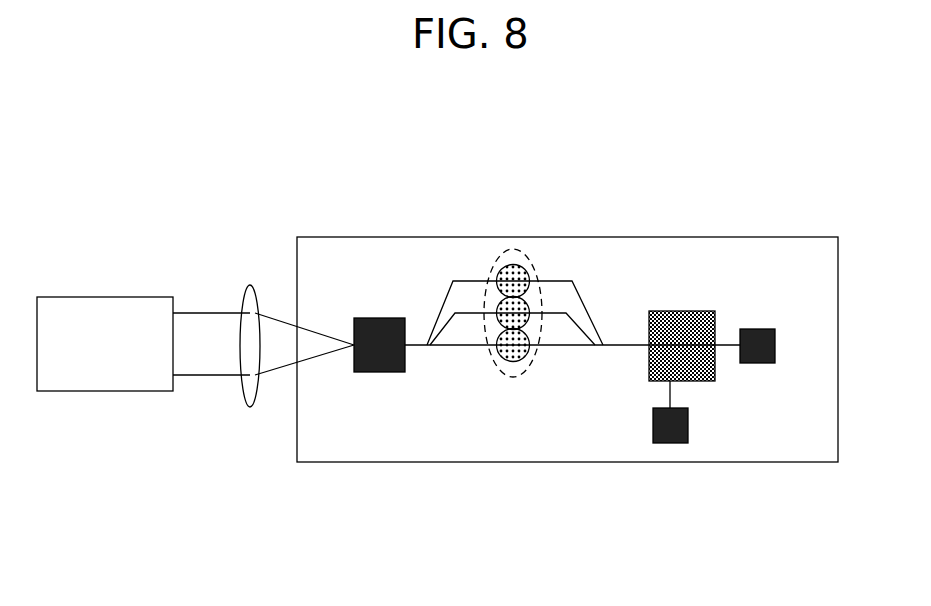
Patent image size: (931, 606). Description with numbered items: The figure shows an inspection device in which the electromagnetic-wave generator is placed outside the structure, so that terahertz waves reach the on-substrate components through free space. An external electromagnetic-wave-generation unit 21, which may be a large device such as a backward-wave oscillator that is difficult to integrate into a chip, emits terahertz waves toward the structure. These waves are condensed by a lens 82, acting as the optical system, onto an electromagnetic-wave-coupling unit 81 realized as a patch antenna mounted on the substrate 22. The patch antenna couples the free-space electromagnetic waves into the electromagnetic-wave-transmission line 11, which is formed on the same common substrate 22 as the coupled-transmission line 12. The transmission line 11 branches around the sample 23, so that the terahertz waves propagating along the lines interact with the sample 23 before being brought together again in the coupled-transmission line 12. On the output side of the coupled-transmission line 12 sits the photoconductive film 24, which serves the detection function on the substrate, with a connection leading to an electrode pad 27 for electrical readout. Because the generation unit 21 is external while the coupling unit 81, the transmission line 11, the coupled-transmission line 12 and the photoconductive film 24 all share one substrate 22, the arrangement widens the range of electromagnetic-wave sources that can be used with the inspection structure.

The electromagnetic-wave-transmission line 11 is at (598, 343).
The coupled-transmission line 12 is at (620, 345).
The electromagnetic-wave-generation unit 21 is at (108, 297).
The substrate 22 is at (795, 450).
The sample 23 is at (523, 373).
The photoconductive film 24 is at (702, 311).
The electrode pad 27 is at (775, 350).
The electromagnetic-wave-coupling unit 81 is at (378, 372).
The lens 82 is at (249, 285).